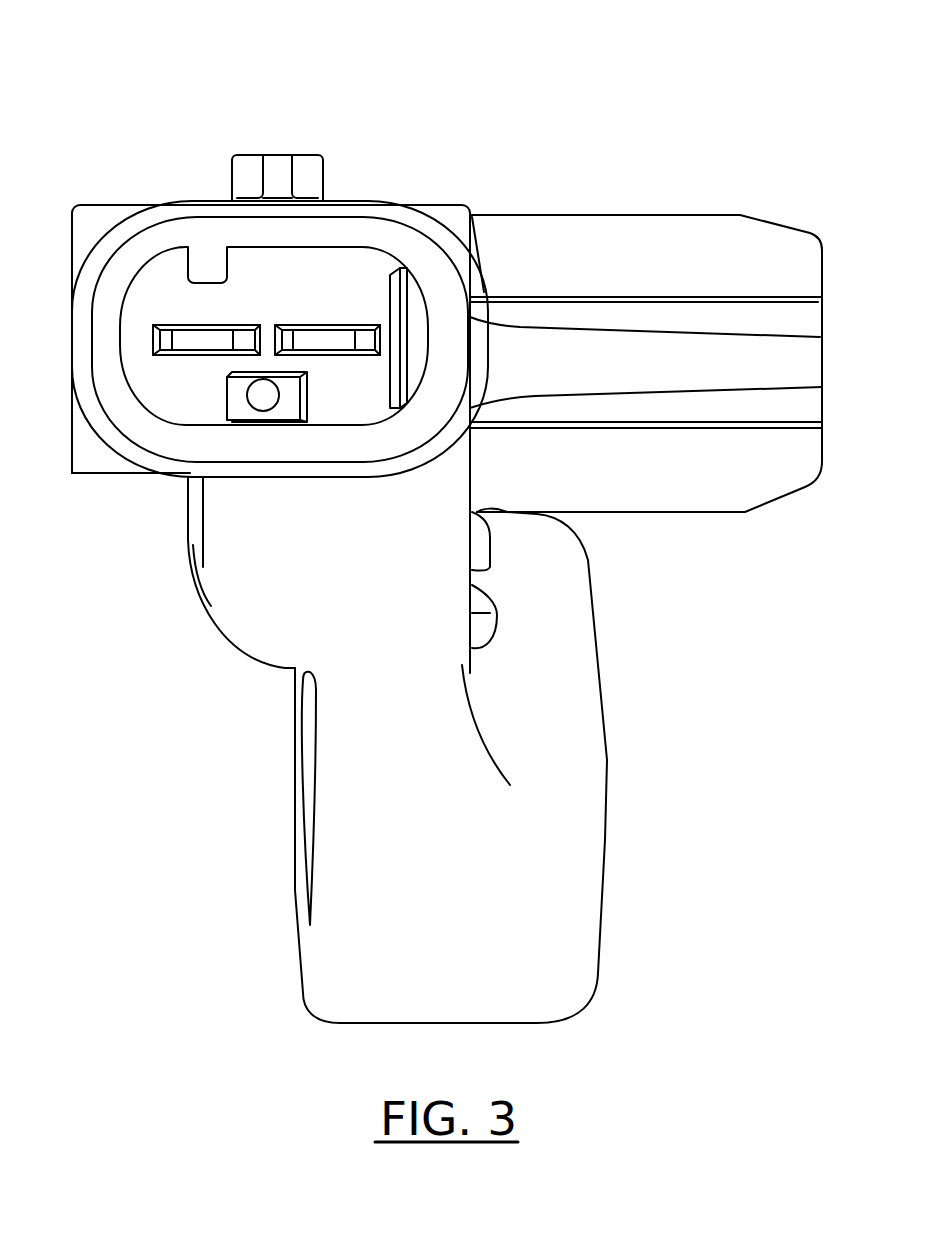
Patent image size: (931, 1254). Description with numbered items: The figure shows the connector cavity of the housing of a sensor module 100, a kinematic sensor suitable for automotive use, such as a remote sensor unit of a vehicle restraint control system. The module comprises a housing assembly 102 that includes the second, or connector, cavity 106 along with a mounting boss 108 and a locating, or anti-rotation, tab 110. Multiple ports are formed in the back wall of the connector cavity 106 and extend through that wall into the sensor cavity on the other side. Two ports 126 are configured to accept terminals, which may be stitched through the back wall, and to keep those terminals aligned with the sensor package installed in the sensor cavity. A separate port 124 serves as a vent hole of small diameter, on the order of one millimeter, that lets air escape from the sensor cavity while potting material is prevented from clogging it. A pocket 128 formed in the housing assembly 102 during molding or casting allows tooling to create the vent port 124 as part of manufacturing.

The sensor module 100 is at (382, 55).
The housing assembly 102 is at (118, 205).
The second cavity 106 is at (405, 265).
The mounting boss 108 is at (605, 790).
The locating tab 110 is at (645, 215).
The port 124 is at (260, 405).
The ports 126 is at (222, 340).
The pocket 128 is at (293, 396).